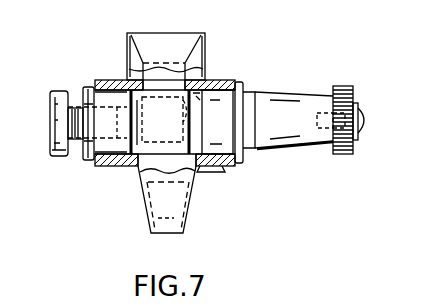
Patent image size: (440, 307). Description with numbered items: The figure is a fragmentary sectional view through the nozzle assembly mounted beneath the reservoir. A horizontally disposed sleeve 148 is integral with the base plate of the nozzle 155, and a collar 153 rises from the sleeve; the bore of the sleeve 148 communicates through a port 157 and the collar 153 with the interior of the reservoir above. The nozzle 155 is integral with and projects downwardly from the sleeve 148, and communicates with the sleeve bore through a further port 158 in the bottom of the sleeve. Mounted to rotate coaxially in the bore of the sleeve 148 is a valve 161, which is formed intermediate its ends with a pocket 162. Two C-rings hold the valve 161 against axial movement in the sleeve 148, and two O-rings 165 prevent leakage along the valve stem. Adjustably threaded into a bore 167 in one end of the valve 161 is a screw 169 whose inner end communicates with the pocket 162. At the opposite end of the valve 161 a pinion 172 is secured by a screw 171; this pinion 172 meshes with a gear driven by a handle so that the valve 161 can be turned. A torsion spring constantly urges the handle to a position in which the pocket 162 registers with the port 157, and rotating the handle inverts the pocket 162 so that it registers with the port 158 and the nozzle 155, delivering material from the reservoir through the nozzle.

The sleeve 148 is at (226, 167).
The collar 153 is at (127, 50).
The nozzle 155 is at (186, 200).
The port 157 is at (127, 68).
The port 158 is at (150, 163).
The valve 161 is at (295, 91).
The pocket 162 is at (199, 119).
The O-ring 165 is at (132, 93).
The bore 167 is at (101, 168).
The screw 169 is at (56, 91).
The screw 171 is at (367, 120).
The pinion 172 is at (348, 154).